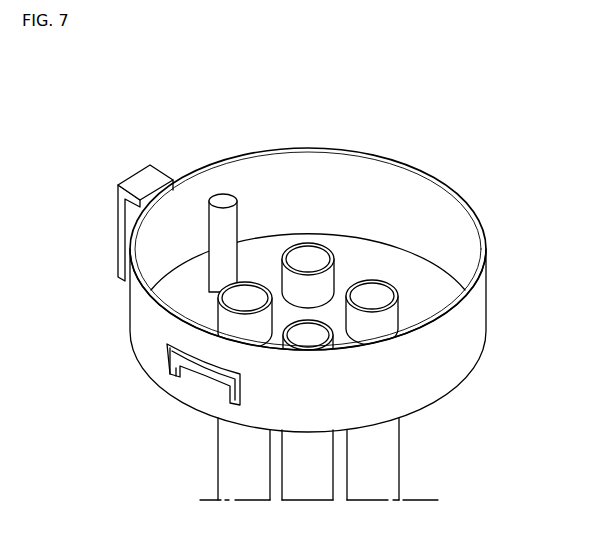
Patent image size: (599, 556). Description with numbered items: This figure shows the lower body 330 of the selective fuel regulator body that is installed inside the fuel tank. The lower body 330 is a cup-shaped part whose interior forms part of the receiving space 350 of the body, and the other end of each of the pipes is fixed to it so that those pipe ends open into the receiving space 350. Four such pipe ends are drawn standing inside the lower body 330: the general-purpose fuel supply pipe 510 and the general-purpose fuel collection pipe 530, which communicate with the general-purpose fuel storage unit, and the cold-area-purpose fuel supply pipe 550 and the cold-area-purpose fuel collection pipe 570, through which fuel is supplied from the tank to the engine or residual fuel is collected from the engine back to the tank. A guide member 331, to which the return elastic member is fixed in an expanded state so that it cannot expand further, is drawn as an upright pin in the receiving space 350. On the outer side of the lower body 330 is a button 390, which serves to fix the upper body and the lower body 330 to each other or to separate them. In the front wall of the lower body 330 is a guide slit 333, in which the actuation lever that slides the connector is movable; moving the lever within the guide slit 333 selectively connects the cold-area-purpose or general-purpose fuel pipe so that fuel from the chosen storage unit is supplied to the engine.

The lower body 330 is at (477, 312).
The guide member 331 is at (223, 200).
The guide slit 333 is at (170, 356).
The receiving space 350 is at (371, 193).
The button 390 is at (149, 156).
The general-purpose fuel supply pipe 510 is at (222, 298).
The general-purpose fuel collection pipe 530 is at (310, 243).
The cold-area-purpose fuel supply pipe 550 is at (320, 333).
The cold-area-purpose fuel collection pipe 570 is at (388, 283).